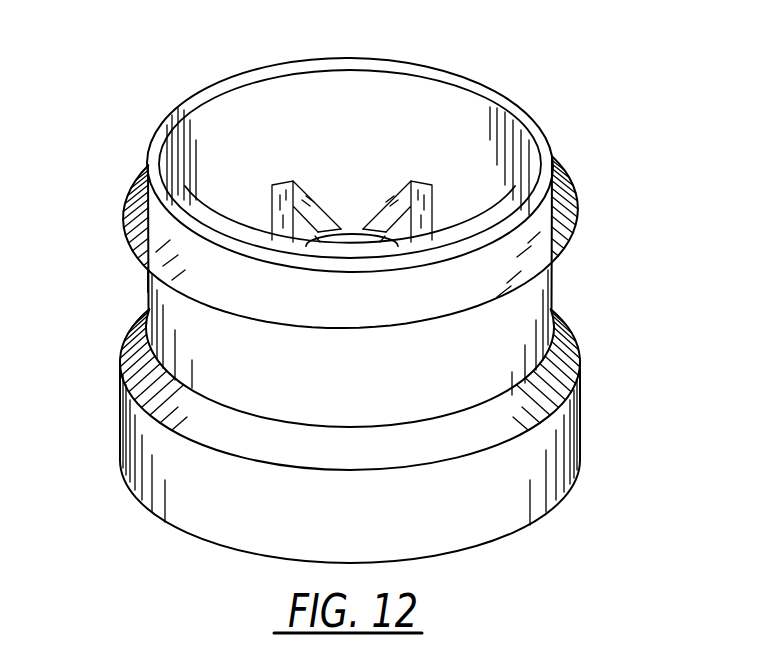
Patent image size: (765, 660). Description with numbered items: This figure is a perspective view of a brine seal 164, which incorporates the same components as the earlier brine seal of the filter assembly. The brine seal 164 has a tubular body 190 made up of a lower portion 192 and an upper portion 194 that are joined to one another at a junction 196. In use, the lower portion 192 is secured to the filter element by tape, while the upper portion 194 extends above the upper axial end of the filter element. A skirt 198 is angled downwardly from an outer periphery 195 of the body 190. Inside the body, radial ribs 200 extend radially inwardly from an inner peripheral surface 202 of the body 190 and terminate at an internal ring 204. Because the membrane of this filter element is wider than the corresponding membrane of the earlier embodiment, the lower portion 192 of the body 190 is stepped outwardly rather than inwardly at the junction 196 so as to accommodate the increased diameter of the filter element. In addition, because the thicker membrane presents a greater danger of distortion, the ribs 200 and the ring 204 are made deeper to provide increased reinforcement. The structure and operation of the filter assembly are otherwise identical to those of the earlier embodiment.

The brine seal 164 is at (372, 242).
The tubular body 190 is at (372, 298).
The lower portion 192 is at (583, 411).
The upper portion 194 is at (557, 291).
The outer periphery 195 is at (147, 276).
The junction 196 is at (580, 328).
The skirt 198 is at (141, 194).
The radial ribs 200 is at (398, 208).
The inner peripheral surface 202 is at (196, 104).
The internal ring 204 is at (347, 233).